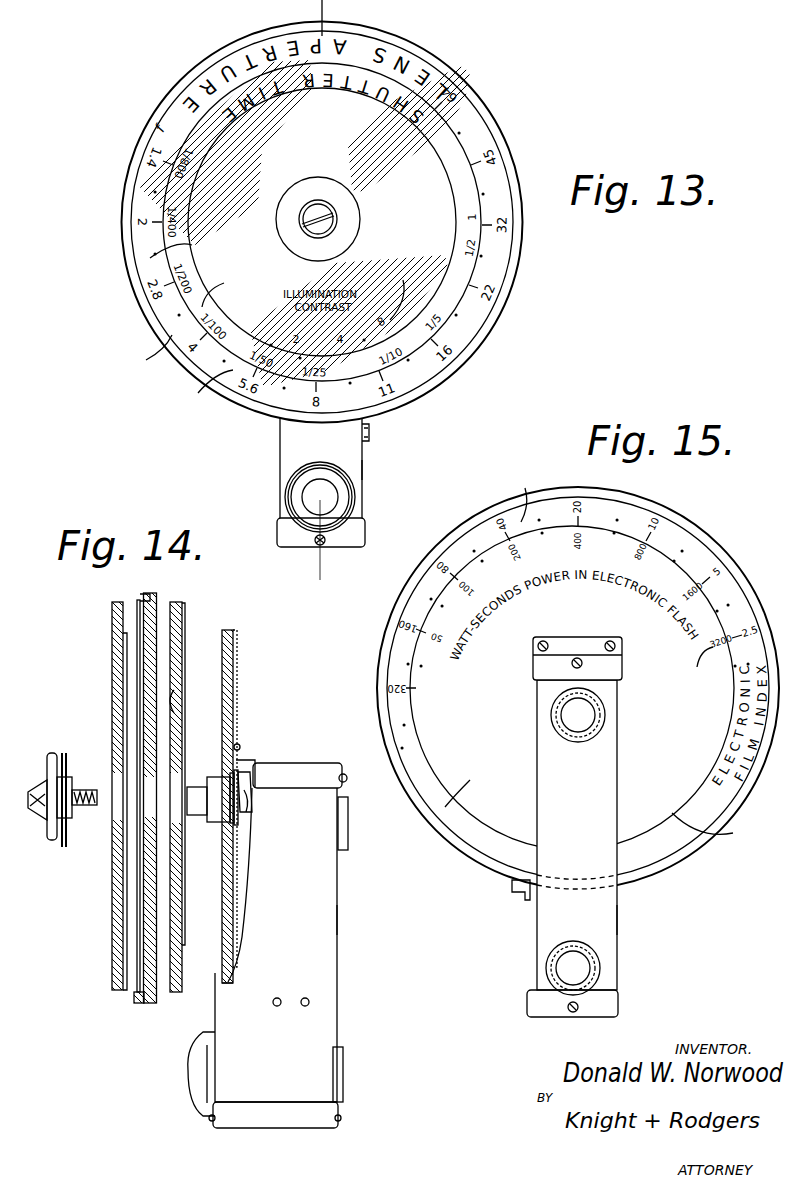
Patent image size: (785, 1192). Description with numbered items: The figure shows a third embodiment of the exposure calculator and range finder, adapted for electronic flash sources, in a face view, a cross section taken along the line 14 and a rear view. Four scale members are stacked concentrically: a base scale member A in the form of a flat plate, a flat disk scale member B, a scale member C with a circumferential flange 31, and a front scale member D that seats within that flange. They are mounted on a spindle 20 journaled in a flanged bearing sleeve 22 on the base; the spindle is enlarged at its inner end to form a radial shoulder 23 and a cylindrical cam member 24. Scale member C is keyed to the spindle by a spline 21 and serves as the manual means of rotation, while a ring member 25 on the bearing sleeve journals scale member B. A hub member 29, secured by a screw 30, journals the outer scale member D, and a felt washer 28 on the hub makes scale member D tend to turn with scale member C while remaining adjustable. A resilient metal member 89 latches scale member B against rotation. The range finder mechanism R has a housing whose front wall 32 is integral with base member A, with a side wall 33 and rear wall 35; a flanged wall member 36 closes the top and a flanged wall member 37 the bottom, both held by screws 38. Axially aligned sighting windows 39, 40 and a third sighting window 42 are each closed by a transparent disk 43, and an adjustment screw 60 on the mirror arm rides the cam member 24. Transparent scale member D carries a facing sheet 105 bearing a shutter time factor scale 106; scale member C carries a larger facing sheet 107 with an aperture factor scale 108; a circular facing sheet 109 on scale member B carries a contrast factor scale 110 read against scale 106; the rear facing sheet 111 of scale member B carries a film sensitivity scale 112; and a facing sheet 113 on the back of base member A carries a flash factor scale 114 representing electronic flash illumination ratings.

In FIG. 13, the section line 14 is at (324, 10).
In FIG. 13, the scale member C is at (482, 92).
In FIG. 14, the scale member C is at (148, 592).
In FIG. 15, the scale member C is at (754, 575).
In FIG. 13, the scale member D is at (492, 128).
In FIG. 14, the scale member D is at (115, 598).
In FIG. 14, the base scale member A is at (231, 628).
In FIG. 15, the base scale member A is at (670, 546).
In FIG. 14, the scale member B is at (184, 598).
In FIG. 15, the scale member B is at (729, 555).
In FIG. 13, the hub member 29 is at (358, 223).
In FIG. 14, the hub member 29 is at (47, 827).
In FIG. 13, the screw 30 is at (318, 203).
In FIG. 14, the screw 30 is at (38, 773).
In FIG. 13, the circumferential flange 31 is at (502, 257).
In FIG. 14, the circumferential flange 31 is at (138, 598).
In FIG. 13, the front wall 32 is at (332, 450).
In FIG. 14, the front wall 32 is at (224, 920).
In FIG. 13, the facing sheet 105 is at (160, 259).
In FIG. 14, the facing sheet 105 is at (114, 970).
In FIG. 13, the shutter time factor scale 106 is at (229, 290).
In FIG. 13, the facing sheet 107 is at (145, 356).
In FIG. 14, the facing sheet 107 is at (142, 980).
In FIG. 13, the aperture factor scale 108 is at (205, 393).
In FIG. 13, the contrast factor scale 110 is at (405, 291).
In FIG. 13, the resilient metal member 89 is at (372, 433).
In FIG. 15, the resilient metal member 89 is at (517, 891).
In FIG. 13, the range finder mechanism R is at (364, 470).
In FIG. 14, the range finder mechanism R is at (339, 920).
In FIG. 15, the range finder mechanism R is at (619, 920).
In FIG. 13, the transparent disk 43 is at (333, 495).
In FIG. 15, the transparent disk 43 is at (588, 715).
In FIG. 13, the sighting window 39 is at (345, 509).
In FIG. 14, the sighting window 39 is at (196, 1065).
In FIG. 13, the flanged wall member 37 is at (358, 532).
In FIG. 14, the flanged wall member 37 is at (275, 1110).
In FIG. 15, the flanged wall member 37 is at (533, 1004).
In FIG. 13, the screws 38 is at (317, 538).
In FIG. 14, the screws 38 is at (238, 746).
In FIG. 15, the screws 38 is at (547, 643).
In FIG. 14, the facing sheet 111 is at (186, 618).
In FIG. 15, the facing sheet 111 is at (470, 784).
In FIG. 14, the facing sheet 113 is at (237, 670).
In FIG. 15, the facing sheet 113 is at (720, 828).
In FIG. 14, the facing sheet 109 is at (175, 713).
In FIG. 14, the ring member 25 is at (213, 785).
In FIG. 14, the cam member 24 is at (238, 780).
In FIG. 14, the flanged wall member 36 is at (303, 767).
In FIG. 15, the flanged wall member 36 is at (533, 672).
In FIG. 14, the adjustment screw 60 is at (250, 808).
In FIG. 14, the sighting window 42 is at (348, 818).
In FIG. 15, the sighting window 42 is at (600, 733).
In FIG. 14, the spindle 20 is at (195, 813).
In FIG. 14, the flanged bearing sleeve 22 is at (232, 830).
In FIG. 14, the radial shoulder 23 is at (236, 858).
In FIG. 14, the side wall 33 is at (297, 893).
In FIG. 14, the spline 21 is at (78, 785).
In FIG. 14, the felt washer 28 is at (65, 845).
In FIG. 14, the sighting window 40 is at (343, 1058).
In FIG. 15, the sighting window 40 is at (600, 972).
In FIG. 15, the film sensitivity scale 112 is at (523, 495).
In FIG. 15, the flash factor scale 114 is at (690, 667).
In FIG. 15, the rear wall 35 is at (585, 804).